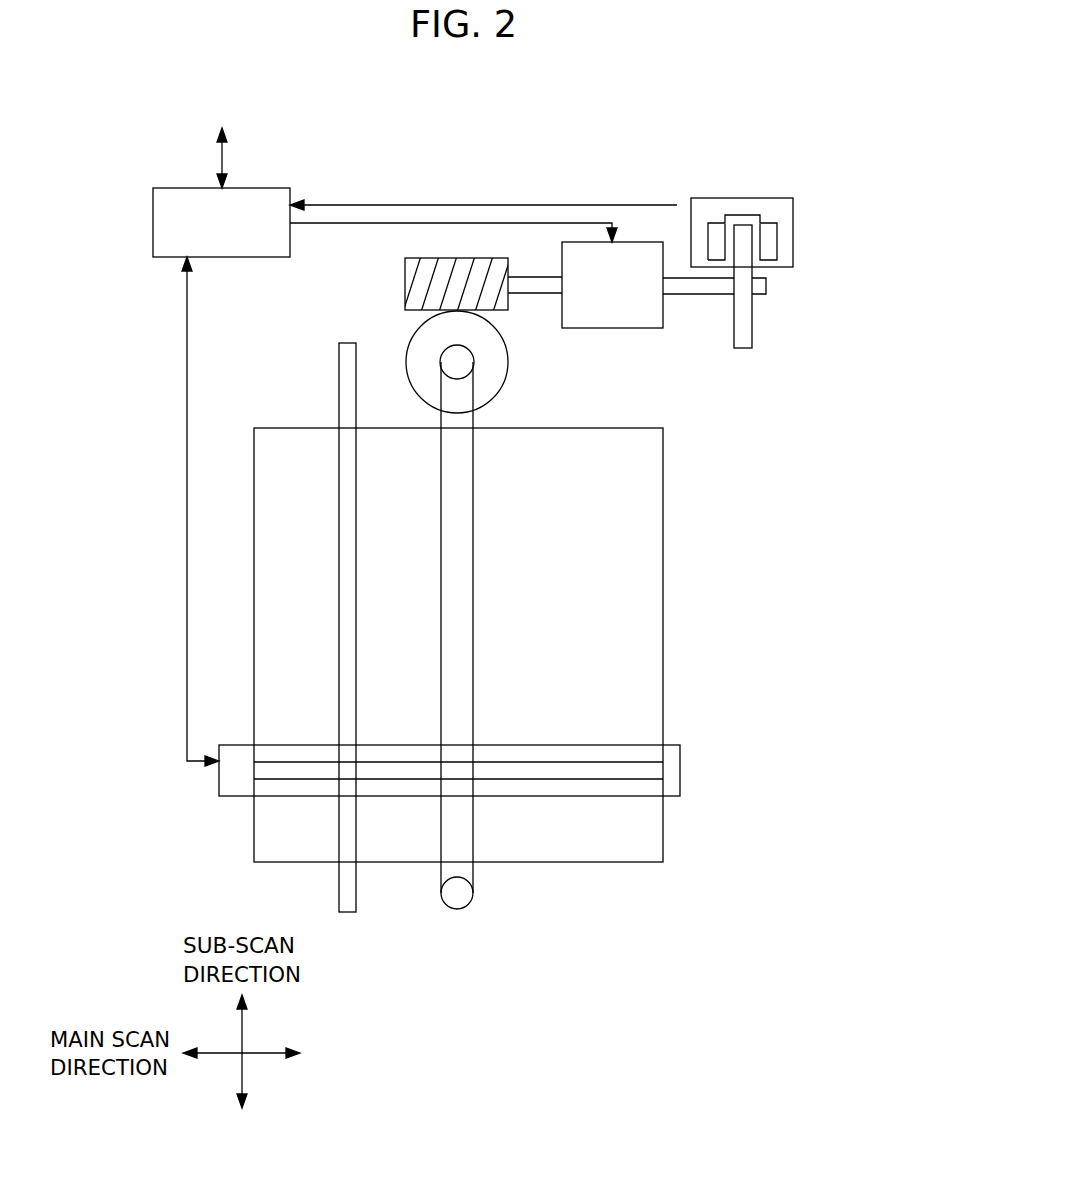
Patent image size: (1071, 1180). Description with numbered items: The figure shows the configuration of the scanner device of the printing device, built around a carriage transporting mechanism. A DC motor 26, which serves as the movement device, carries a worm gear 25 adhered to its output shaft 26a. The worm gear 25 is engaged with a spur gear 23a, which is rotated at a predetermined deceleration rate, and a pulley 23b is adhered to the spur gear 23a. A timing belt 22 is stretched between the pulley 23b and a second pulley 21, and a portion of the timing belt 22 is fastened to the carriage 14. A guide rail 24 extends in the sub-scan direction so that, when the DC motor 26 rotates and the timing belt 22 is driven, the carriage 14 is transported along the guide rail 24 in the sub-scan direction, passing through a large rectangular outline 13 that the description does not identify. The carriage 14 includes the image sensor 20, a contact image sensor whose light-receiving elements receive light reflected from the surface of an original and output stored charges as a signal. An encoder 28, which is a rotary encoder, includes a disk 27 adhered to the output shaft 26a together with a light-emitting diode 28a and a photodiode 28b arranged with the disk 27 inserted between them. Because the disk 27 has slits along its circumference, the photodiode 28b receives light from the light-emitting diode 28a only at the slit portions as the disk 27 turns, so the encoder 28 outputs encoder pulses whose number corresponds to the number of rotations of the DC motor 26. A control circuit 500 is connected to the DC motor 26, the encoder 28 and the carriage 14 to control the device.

The control circuit 500 is at (256, 187).
The worm gear 25 is at (405, 286).
The DC motor 26 is at (640, 333).
The output shaft 26a is at (716, 300).
The disk 27 is at (736, 349).
The encoder 28 is at (780, 196).
The light-emitting diode 28a is at (708, 240).
The photodiode 28b is at (777, 240).
The spur gear 23a is at (508, 366).
The pulley 23b is at (472, 368).
The timing belt 22 is at (473, 552).
The pulley 21 is at (446, 910).
The guide rail 24 is at (339, 366).
The platen 13 is at (663, 587).
The carriage 14 is at (680, 752).
The image sensor 20 is at (574, 762).